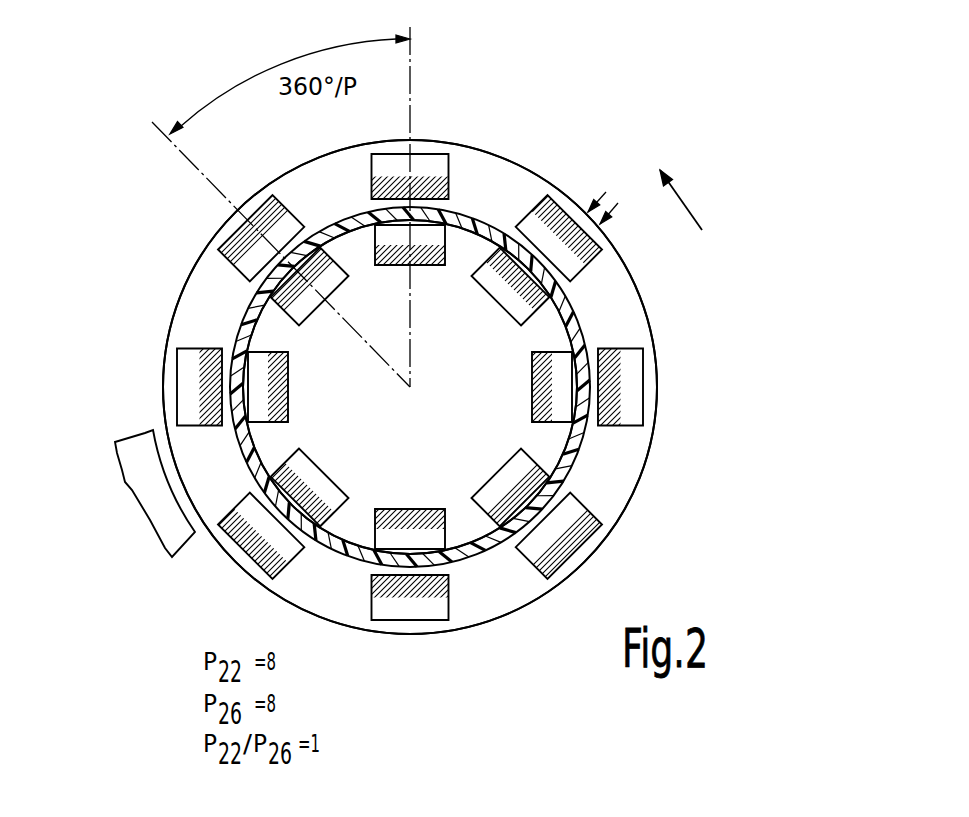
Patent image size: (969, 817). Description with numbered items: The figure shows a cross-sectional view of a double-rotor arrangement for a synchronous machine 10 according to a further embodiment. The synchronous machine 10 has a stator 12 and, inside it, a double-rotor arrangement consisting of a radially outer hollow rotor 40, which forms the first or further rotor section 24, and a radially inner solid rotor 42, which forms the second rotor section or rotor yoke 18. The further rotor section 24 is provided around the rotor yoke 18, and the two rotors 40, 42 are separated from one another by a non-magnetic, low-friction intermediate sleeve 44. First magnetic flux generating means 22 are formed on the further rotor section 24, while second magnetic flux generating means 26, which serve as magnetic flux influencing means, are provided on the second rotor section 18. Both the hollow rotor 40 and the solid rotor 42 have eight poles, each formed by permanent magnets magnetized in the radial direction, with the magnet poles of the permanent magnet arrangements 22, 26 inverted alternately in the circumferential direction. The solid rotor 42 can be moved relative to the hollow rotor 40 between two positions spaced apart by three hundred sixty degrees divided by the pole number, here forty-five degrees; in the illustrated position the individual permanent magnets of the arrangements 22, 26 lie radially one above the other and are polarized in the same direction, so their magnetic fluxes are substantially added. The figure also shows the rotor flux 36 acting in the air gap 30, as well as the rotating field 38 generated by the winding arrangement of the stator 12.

The synchronous machine 10 is at (826, 210).
The stator 12 is at (143, 460).
The first magnetic flux generating means 22 is at (632, 390).
The second magnetic flux generating means 26 is at (492, 265).
The air gap 30 is at (167, 450).
The rotor flux 36 is at (597, 197).
The rotating field 38 is at (692, 203).
The hollow rotor 40 is at (494, 387).
The further rotor section 24 is at (608, 295).
The solid rotor 42 is at (535, 387).
The rotor yoke 18 is at (455, 345).
The intermediate sleeve 44 is at (577, 462).